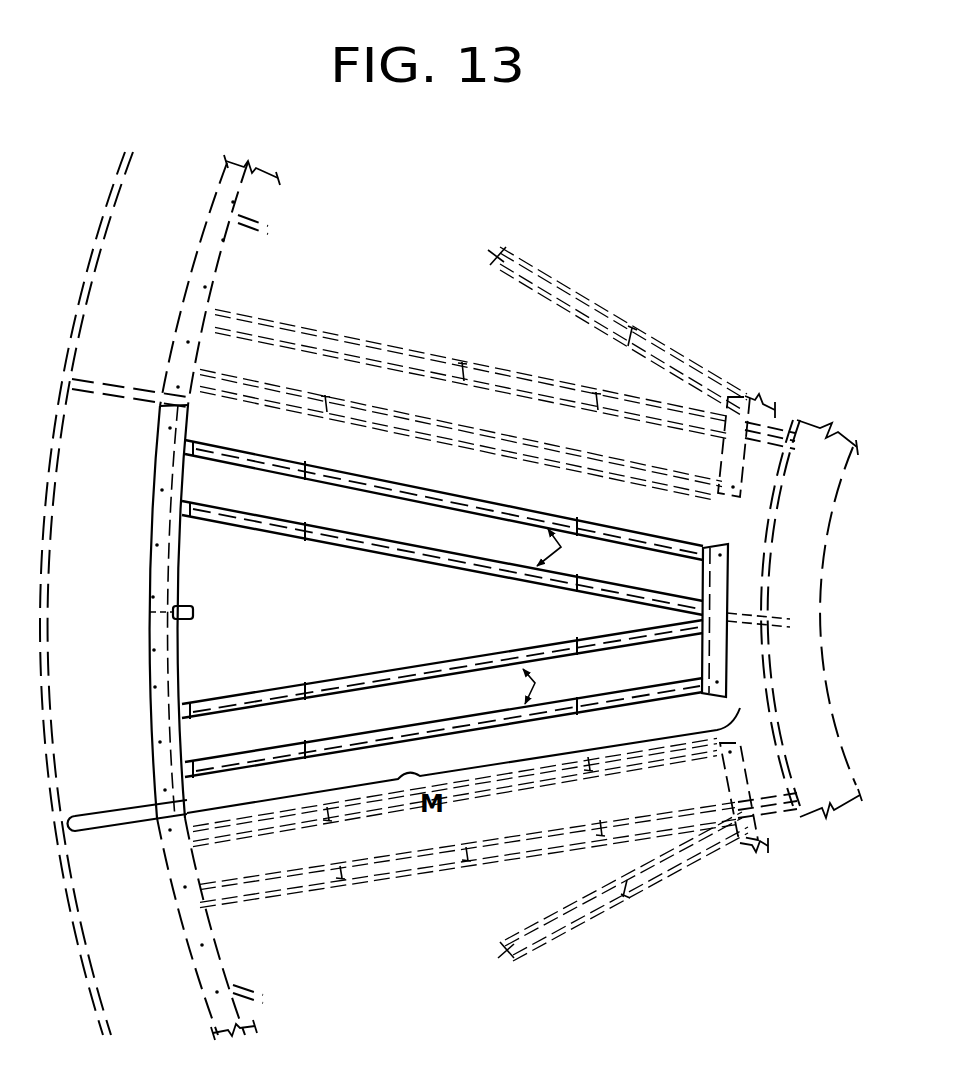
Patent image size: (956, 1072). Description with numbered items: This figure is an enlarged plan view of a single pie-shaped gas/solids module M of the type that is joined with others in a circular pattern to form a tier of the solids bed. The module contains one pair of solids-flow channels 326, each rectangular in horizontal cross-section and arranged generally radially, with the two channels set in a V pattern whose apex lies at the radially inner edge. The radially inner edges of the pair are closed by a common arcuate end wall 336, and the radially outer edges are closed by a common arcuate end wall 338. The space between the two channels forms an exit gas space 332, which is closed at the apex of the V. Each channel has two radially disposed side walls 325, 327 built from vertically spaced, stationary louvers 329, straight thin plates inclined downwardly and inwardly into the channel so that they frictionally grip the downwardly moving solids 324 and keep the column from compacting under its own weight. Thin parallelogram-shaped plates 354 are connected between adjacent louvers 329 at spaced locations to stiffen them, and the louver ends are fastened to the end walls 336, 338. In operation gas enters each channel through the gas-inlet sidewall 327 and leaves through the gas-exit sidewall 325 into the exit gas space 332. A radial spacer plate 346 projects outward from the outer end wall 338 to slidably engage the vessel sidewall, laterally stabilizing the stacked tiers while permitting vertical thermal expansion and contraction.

The solids 324 is at (519, 555).
The gas-exit sidewall 325 is at (410, 663).
The solids-flow channel 326 is at (290, 453).
The gas-inlet sidewall 327 is at (370, 496).
The louvers 329 is at (562, 616).
The exit gas space 332 is at (490, 627).
The arcuate end wall 336 is at (699, 581).
The arcuate end wall 338 is at (193, 478).
The spacer plate 346 is at (123, 802).
The parallelogram-shaped plate 354 is at (193, 441).